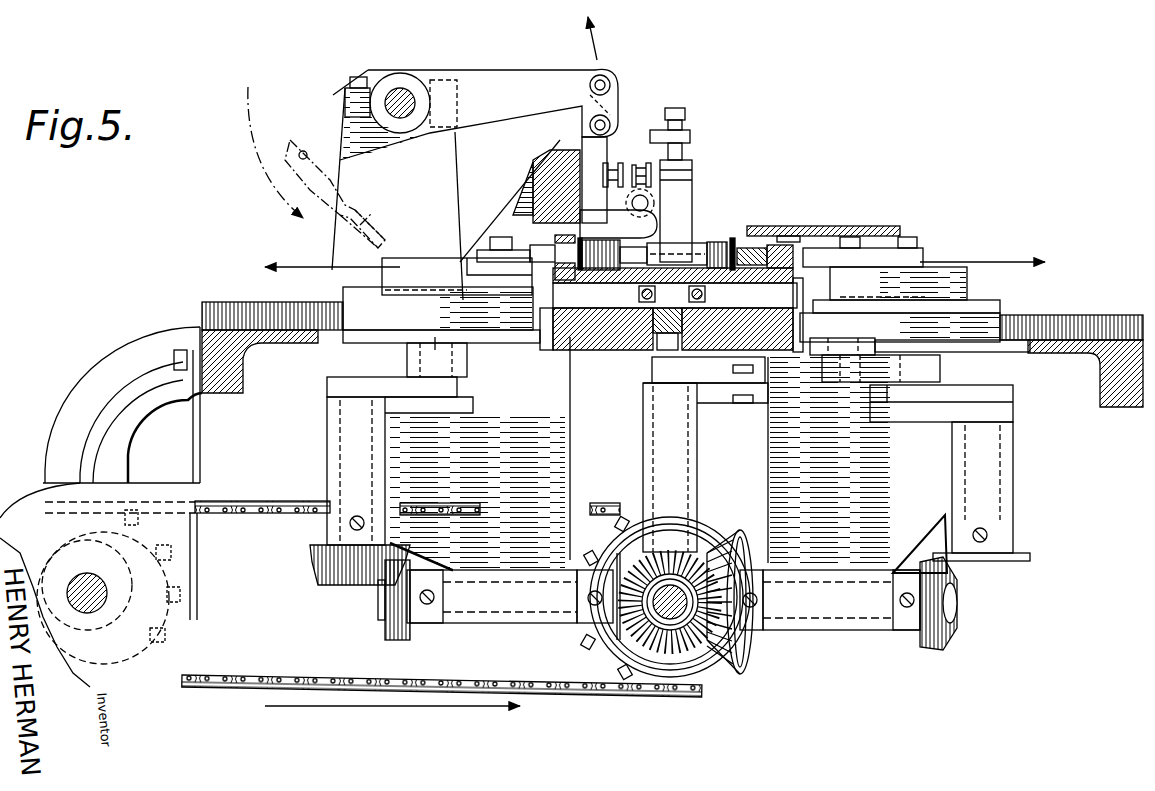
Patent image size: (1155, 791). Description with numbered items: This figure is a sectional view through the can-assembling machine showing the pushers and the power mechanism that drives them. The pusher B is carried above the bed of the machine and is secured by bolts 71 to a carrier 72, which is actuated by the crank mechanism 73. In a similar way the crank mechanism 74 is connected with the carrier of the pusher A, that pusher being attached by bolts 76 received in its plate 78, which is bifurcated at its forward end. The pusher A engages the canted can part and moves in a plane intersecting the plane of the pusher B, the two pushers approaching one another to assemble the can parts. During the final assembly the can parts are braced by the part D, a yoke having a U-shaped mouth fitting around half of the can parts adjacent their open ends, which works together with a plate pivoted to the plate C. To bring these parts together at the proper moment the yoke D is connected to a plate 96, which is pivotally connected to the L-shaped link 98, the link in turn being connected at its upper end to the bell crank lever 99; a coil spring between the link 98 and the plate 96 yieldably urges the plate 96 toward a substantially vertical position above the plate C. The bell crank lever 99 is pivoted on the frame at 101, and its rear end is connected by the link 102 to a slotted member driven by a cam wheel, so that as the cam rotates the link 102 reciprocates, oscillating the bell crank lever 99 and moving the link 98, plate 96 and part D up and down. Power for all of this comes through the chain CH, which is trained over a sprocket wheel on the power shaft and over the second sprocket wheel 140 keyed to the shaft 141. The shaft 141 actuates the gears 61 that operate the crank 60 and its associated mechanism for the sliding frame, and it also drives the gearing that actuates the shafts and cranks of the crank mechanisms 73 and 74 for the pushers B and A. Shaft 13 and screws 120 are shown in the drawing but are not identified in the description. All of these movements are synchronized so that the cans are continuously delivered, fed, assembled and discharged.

The pivot 101 is at (397, 103).
The bell crank lever 99 is at (500, 80).
The plate 96 is at (612, 88).
The link 98 is at (593, 163).
The part D is at (690, 183).
The pusher B is at (546, 243).
The bolts 71 is at (492, 237).
The carrier 72 is at (395, 267).
The link 102 is at (343, 228).
The shaft 13 is at (713, 247).
The pusher A is at (807, 255).
The bolts 76 is at (630, 363).
The plate 78 is at (927, 257).
The plate C is at (671, 310).
The screws 120 is at (717, 293).
The crank mechanism 73 is at (410, 363).
The crank 60 is at (727, 393).
The shaft 141 is at (670, 615).
The sprocket wheel 140 is at (705, 667).
The gears 61 is at (753, 524).
The crank mechanism 74 is at (968, 398).
The chain CH is at (237, 678).